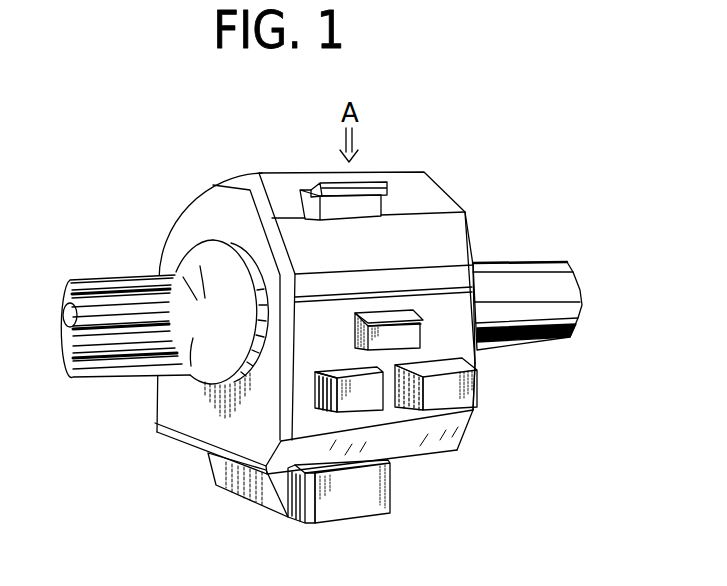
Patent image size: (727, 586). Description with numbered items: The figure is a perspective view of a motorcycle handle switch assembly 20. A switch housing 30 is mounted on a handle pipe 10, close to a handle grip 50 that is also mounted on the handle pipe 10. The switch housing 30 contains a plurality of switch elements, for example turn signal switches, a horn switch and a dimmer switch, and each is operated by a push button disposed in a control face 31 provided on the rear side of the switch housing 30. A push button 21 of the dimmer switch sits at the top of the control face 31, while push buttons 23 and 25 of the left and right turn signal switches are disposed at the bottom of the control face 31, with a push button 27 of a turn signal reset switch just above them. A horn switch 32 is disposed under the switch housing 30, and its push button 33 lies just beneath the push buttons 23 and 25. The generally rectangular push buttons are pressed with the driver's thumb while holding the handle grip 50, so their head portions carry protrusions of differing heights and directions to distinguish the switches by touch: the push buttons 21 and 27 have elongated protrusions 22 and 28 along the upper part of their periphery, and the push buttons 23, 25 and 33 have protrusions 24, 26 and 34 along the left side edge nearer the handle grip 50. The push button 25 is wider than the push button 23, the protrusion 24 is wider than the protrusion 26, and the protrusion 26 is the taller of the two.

The handle pipe 10 is at (542, 272).
The handle switch assembly 20 is at (449, 160).
The push button 21 is at (370, 213).
The elongated protrusion 22 is at (382, 196).
The push button 23 is at (367, 402).
The protrusion 24 is at (322, 410).
The push button 25 is at (477, 385).
The protrusion 26 is at (425, 414).
The push button 27 is at (358, 341).
The elongated protrusion 28 is at (423, 318).
The switch housing 30 is at (455, 245).
The control face 31 is at (455, 340).
The horn switch 32 is at (270, 494).
The push button 33 is at (371, 504).
The protrusion 34 is at (310, 523).
The handle grip 50 is at (200, 268).